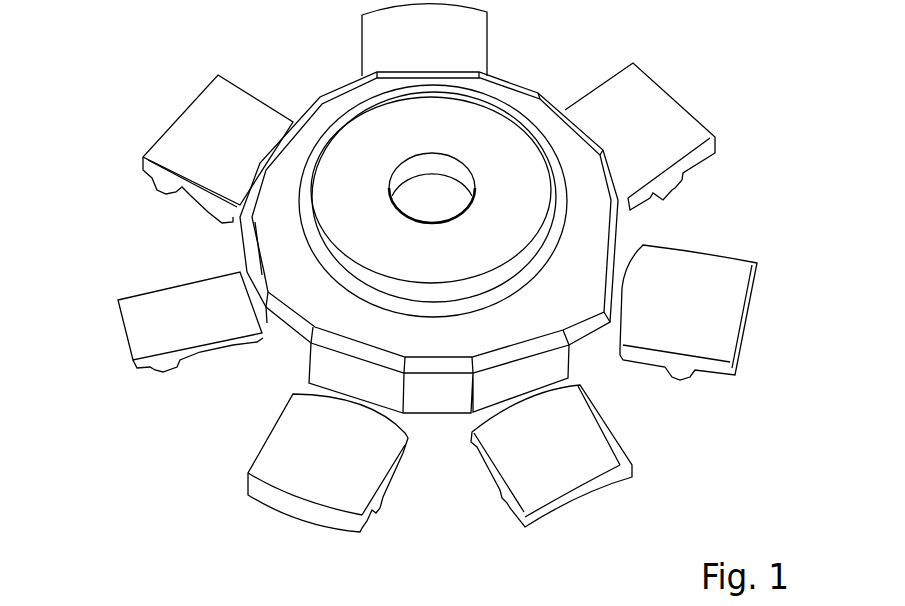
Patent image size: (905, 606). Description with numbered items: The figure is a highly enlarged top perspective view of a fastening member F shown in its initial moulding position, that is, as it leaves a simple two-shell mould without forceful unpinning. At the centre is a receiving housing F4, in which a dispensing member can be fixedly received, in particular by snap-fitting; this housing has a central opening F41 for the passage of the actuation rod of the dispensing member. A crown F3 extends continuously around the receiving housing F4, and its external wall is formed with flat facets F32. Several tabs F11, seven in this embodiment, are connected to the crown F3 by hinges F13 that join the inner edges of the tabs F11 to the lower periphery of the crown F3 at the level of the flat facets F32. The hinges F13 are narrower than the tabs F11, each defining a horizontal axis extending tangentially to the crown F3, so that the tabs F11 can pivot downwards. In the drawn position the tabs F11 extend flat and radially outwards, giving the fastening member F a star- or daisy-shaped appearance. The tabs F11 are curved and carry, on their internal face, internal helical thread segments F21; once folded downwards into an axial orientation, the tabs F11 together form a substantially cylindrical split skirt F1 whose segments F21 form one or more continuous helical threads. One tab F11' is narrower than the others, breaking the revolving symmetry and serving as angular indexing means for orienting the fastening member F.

The fastening member F is at (578, 68).
The split skirt F1 is at (750, 302).
The crown F3 is at (637, 232).
The receiving housing F4 is at (481, 118).
The tabs F11 is at (480, 300).
The tab of reduced width F11' is at (144, 338).
The hinges F13 is at (620, 283).
The internal helical thread segments F21 is at (210, 213).
The flat facets F32 is at (632, 478).
The central opening F41 is at (420, 190).